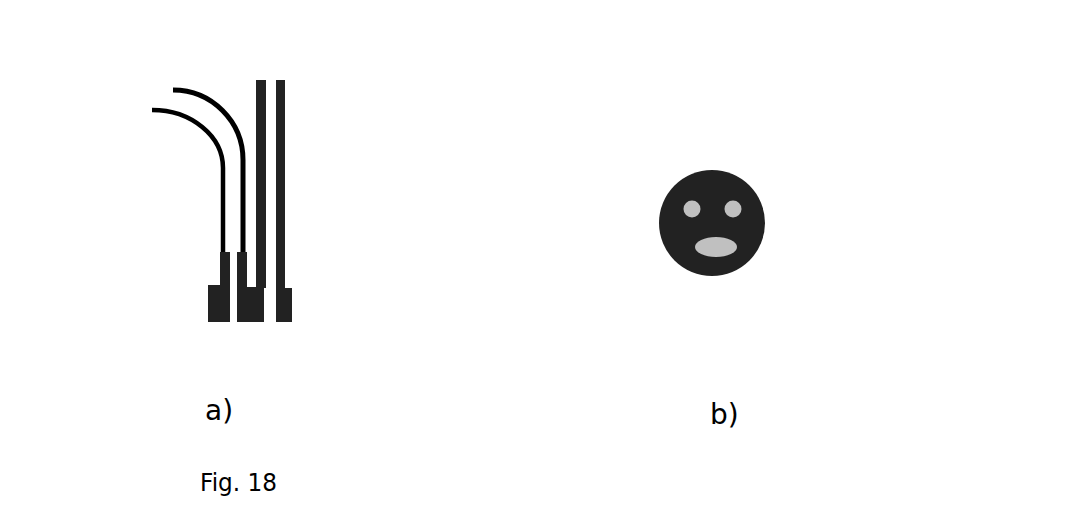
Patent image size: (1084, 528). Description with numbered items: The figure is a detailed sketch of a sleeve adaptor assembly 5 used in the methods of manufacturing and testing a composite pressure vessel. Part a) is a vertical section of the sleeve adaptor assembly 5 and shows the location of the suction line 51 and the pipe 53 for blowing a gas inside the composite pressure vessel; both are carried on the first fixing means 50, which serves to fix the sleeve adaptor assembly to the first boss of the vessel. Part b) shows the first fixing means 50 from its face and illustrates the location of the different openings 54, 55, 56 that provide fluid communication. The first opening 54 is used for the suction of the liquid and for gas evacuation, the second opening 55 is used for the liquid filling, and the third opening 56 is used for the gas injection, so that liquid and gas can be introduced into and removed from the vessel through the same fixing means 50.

The sleeve adaptor assembly 5 is at (118, 73).
The first fixing means 50 is at (296, 305).
The suction line 51 is at (208, 82).
The pipe 53 is at (300, 133).
The first opening 54 is at (690, 213).
The second opening 55 is at (737, 213).
The third opening 56 is at (720, 248).